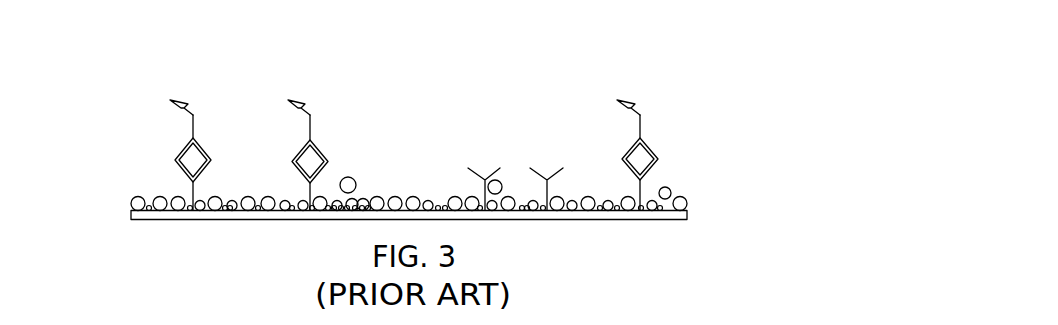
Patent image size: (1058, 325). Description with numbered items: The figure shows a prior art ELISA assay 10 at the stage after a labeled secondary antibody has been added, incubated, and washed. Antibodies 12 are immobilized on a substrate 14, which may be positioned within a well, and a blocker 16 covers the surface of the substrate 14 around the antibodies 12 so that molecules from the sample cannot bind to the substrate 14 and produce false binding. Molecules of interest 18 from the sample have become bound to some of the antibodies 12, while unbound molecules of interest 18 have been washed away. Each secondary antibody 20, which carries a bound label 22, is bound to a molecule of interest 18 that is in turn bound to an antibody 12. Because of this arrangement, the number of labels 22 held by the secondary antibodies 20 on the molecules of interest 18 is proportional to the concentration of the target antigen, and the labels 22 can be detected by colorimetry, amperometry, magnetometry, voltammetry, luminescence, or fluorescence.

The ELISA assay 10 is at (743, 125).
The antibody 12 is at (468, 168).
The substrate 14 is at (687, 215).
The blocker 16 is at (356, 181).
The molecule of interest 18 is at (176, 161).
The secondary antibody 20 is at (193, 130).
The label 22 is at (181, 97).